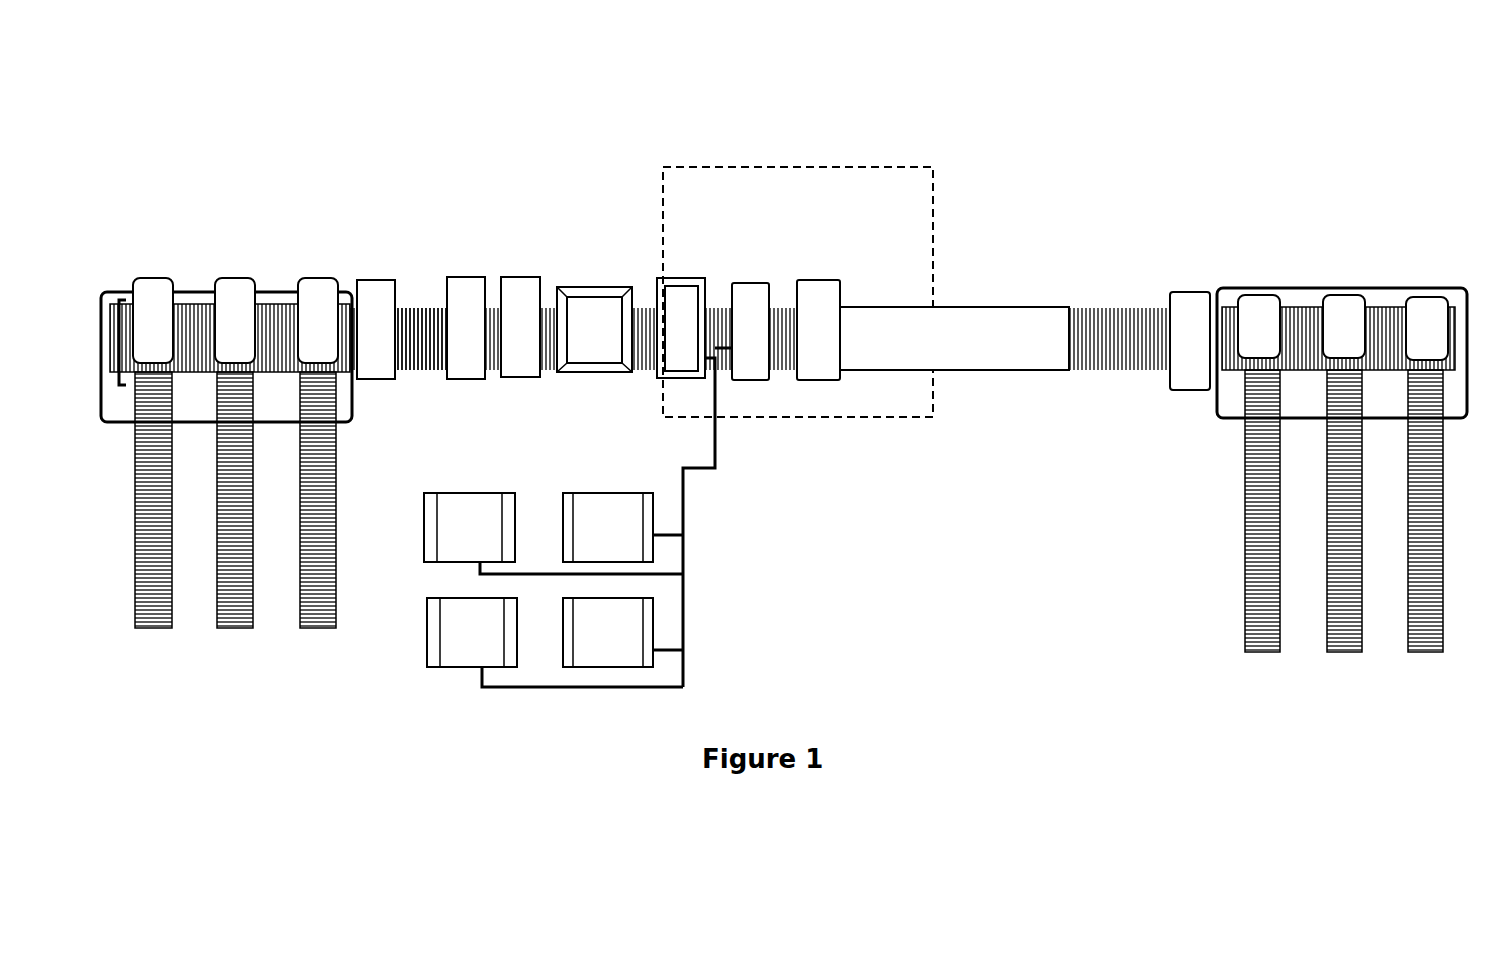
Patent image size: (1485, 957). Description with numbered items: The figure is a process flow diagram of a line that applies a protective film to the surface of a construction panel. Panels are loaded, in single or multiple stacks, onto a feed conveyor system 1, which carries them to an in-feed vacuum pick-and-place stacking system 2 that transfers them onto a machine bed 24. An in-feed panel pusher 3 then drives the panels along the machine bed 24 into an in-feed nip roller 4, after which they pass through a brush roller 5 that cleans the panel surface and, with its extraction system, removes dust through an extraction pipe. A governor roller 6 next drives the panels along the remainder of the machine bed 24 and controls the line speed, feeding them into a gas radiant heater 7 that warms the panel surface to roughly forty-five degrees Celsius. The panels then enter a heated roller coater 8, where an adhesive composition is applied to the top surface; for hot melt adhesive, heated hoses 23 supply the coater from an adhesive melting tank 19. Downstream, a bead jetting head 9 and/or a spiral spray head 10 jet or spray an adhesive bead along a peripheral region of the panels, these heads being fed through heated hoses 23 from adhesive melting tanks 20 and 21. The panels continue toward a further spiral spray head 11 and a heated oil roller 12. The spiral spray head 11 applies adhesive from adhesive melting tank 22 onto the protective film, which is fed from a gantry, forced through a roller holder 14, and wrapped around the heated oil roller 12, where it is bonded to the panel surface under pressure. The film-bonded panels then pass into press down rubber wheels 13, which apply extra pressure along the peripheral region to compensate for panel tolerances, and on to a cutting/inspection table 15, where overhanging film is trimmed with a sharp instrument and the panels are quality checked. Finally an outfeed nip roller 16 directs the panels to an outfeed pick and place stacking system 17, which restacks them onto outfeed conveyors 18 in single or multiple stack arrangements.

The feed conveyor system 1 is at (339, 584).
The in-feed vacuum pick-and-place stacking system 2 is at (235, 320).
The in-feed panel pusher 3 is at (121, 298).
The in-feed nip roller 4 is at (376, 329).
The brush roller 5 is at (466, 328).
The governor roller 6 is at (520, 327).
The gas radiant heater 7 is at (594, 329).
The heated roller coater 8 is at (681, 328).
The bead jetting head 9 is at (753, 294).
The spiral spray head 10 is at (762, 318).
The spiral spray head 11 is at (767, 345).
The heated oil roller 12 is at (820, 288).
The press down rubber wheels 13 is at (823, 313).
The roller holder 14 is at (938, 221).
The cutting/inspection table 15 is at (954, 338).
The outfeed nip roller 16 is at (1197, 314).
The outfeed pick and place stacking system 17 is at (1262, 312).
The outfeed conveyors 18 is at (1241, 582).
The adhesive melting tank 19 is at (469, 527).
The adhesive melting tank 20 is at (608, 527).
The adhesive melting tank 21 is at (472, 632).
The adhesive melting tank 22 is at (608, 632).
The heated hoses 23 is at (687, 604).
The machine bed 24 is at (417, 352).